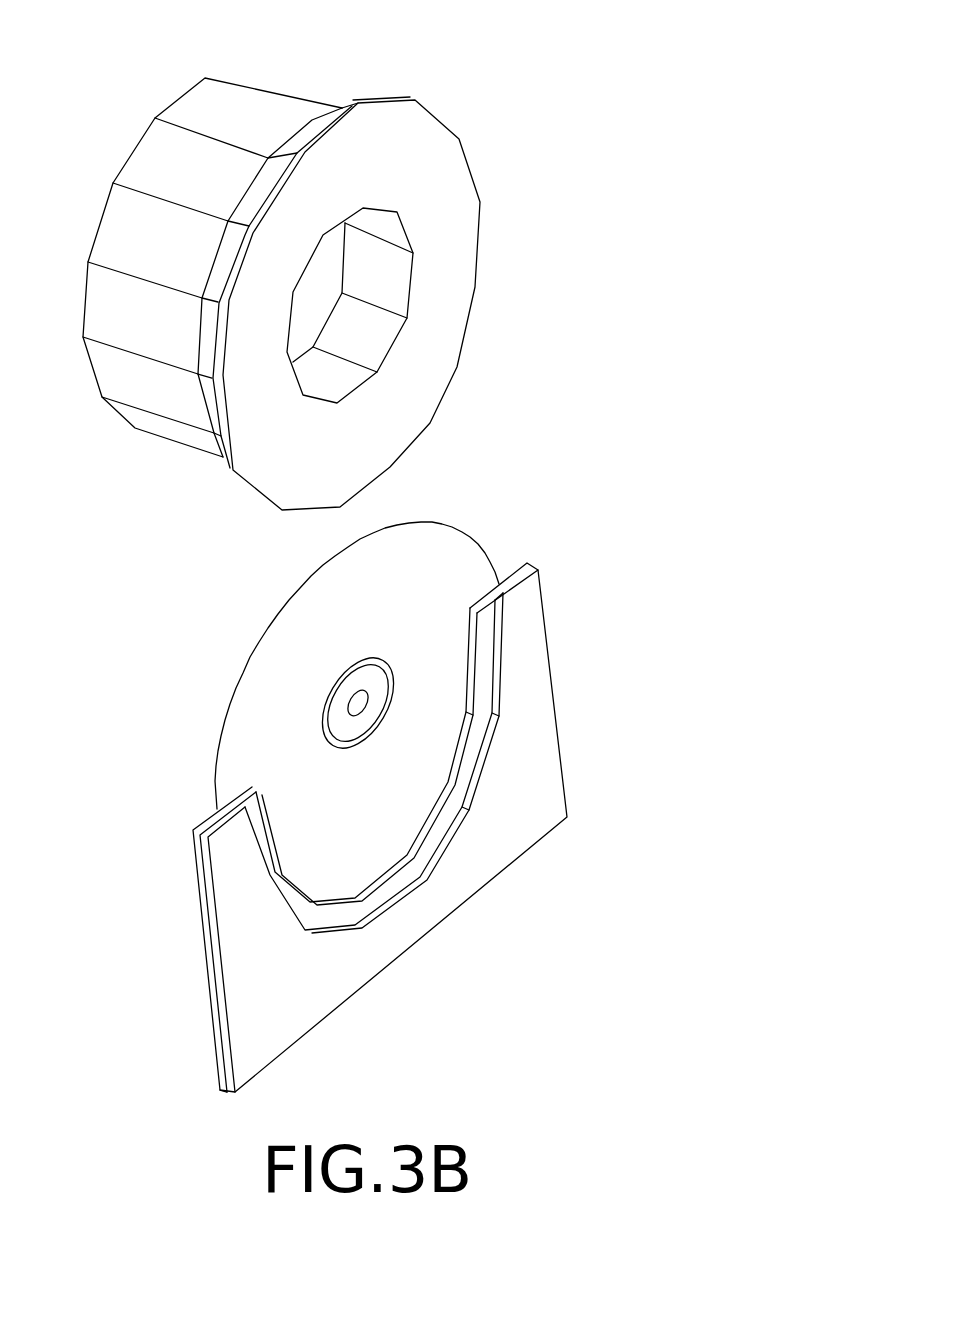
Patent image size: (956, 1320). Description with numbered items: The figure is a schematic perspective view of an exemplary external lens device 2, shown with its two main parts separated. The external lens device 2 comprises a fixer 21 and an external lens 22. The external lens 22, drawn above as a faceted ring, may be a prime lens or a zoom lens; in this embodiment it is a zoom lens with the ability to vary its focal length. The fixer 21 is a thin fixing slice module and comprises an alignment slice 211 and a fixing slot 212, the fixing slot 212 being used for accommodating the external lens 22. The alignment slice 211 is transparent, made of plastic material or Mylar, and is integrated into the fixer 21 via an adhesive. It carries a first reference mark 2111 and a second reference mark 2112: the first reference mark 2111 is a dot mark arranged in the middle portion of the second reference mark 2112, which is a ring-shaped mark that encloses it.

The external lens device 2 is at (589, 31).
The external lens 22 is at (164, 160).
The fixer 21 is at (579, 680).
The alignment slice 211 is at (459, 580).
The first reference mark 2111 is at (357, 680).
The second reference mark 2112 is at (354, 697).
The fixing slot 212 is at (408, 846).